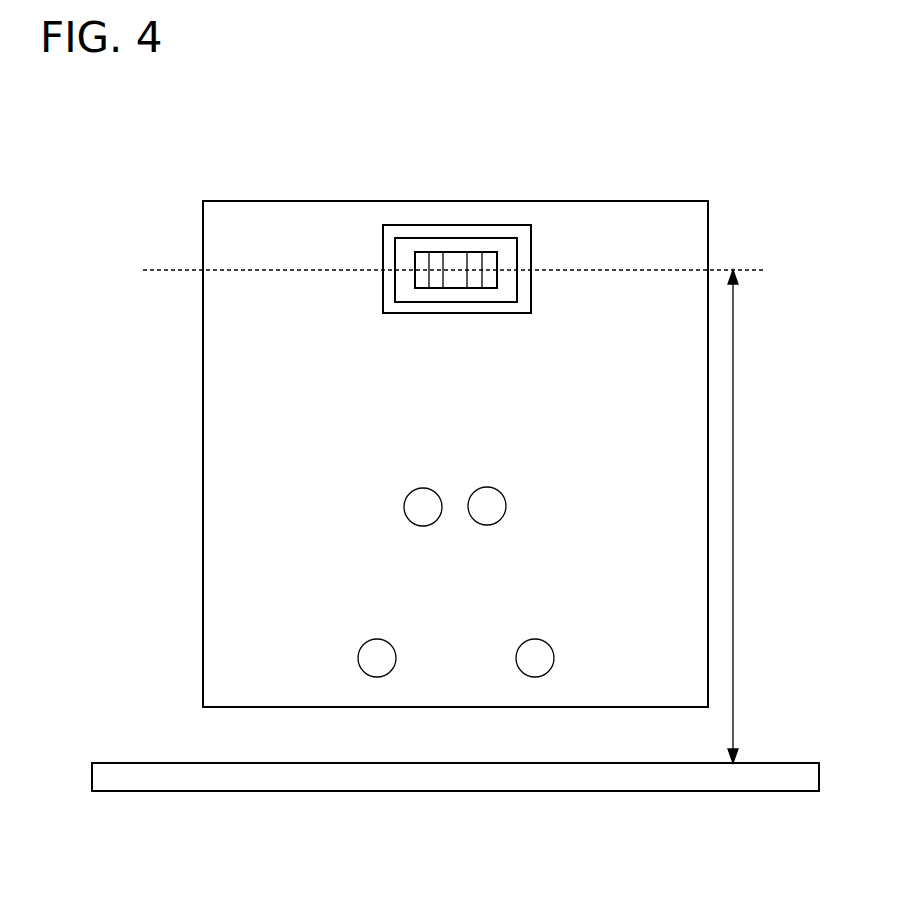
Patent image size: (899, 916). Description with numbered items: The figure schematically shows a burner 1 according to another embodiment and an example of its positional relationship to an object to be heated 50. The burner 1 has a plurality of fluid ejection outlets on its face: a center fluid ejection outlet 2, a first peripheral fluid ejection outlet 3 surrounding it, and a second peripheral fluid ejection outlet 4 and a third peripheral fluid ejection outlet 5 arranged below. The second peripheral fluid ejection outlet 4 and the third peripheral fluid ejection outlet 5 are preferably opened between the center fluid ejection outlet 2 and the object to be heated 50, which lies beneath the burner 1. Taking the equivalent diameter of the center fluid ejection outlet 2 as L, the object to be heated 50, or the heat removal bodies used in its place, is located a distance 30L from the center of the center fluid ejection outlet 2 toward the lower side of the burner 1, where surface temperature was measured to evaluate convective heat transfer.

The burner 1 is at (238, 160).
The center fluid ejection outlet 2 is at (478, 263).
The first peripheral fluid ejection outlet 3 is at (530, 253).
The second peripheral fluid ejection outlet 4 is at (485, 497).
The third peripheral fluid ejection outlet 5 is at (530, 650).
The object to be heated 50 is at (167, 793).
The distance of thirty equivalent diameters 30L is at (753, 516).